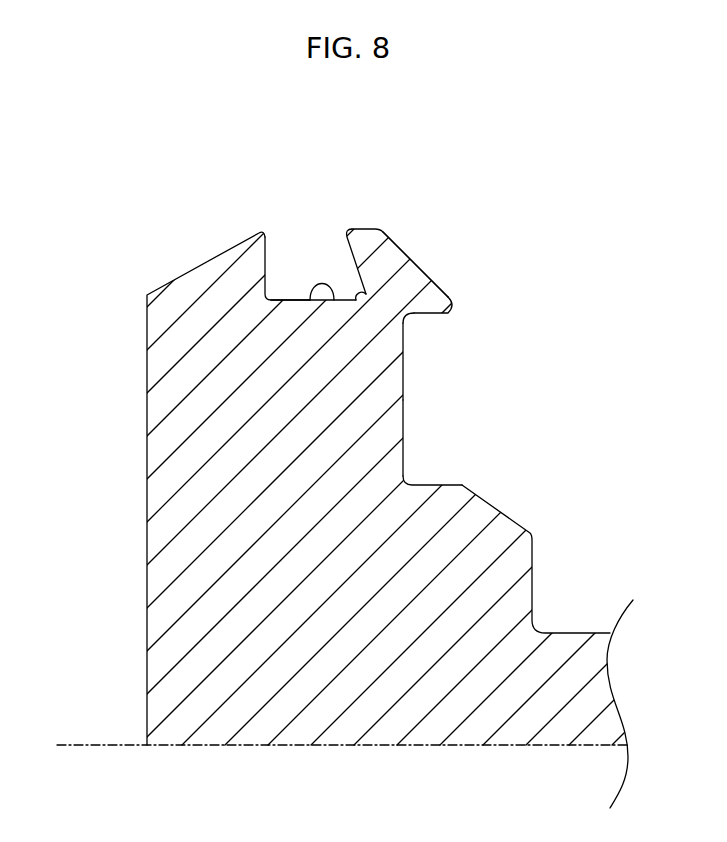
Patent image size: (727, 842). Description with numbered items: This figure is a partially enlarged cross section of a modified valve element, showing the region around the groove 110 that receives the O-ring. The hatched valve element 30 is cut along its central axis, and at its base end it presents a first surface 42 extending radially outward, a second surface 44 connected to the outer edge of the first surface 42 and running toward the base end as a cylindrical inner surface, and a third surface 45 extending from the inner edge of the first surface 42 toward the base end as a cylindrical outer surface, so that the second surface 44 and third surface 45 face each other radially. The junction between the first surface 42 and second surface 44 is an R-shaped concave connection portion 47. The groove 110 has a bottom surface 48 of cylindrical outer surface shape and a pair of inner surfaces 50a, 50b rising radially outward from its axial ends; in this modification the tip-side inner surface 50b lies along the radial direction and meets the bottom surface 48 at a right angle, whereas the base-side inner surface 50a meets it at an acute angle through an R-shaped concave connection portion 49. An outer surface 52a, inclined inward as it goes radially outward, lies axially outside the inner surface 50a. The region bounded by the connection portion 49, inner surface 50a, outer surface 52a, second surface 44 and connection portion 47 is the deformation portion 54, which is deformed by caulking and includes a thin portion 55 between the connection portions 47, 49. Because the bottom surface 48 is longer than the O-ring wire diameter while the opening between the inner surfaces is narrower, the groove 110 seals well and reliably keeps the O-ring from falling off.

The rim body 30 is at (185, 473).
The first surface 42 is at (407, 408).
The second surface 44 is at (430, 316).
The third surface 45 is at (428, 485).
The connection portion 47 is at (410, 318).
The bottom surface 48 is at (308, 307).
The connection portion 49 is at (367, 287).
The inner surface 50a is at (353, 263).
The inner surface 50b is at (278, 238).
The outer surface 52a is at (416, 270).
The deformation portion 54 is at (396, 256).
The thin portion 55 is at (390, 310).
The groove 110 is at (302, 220).